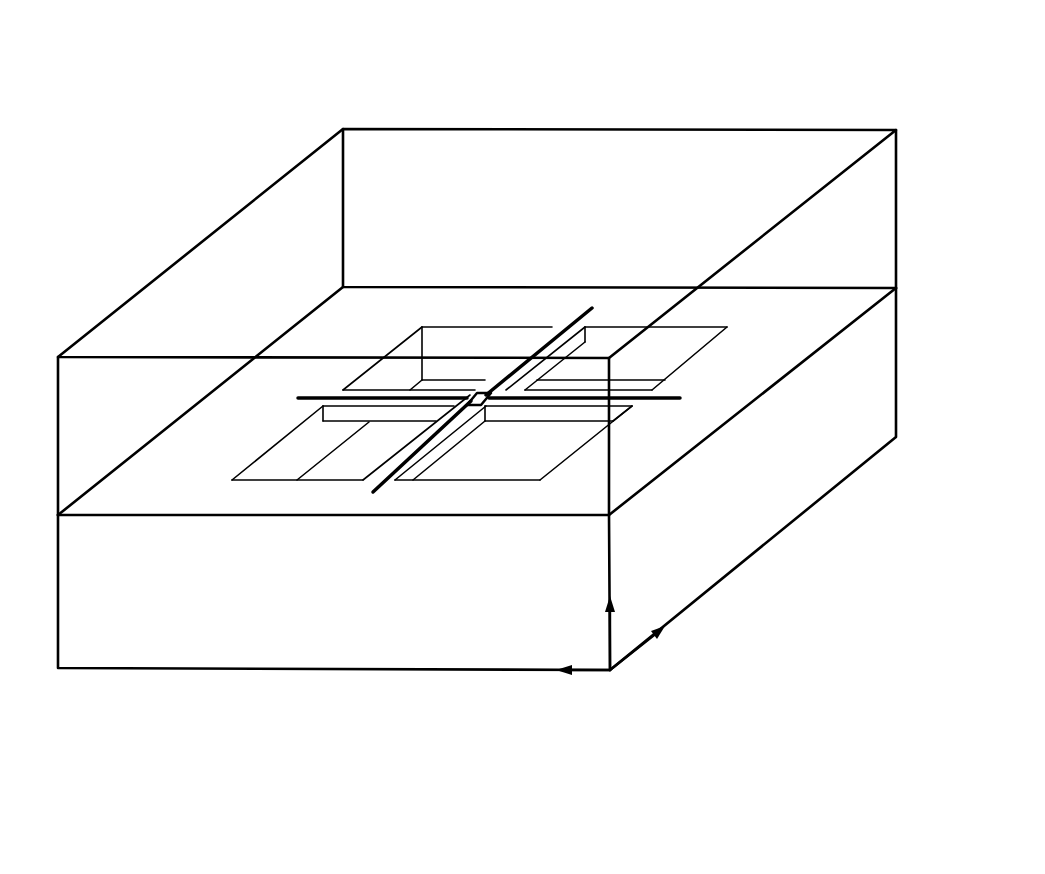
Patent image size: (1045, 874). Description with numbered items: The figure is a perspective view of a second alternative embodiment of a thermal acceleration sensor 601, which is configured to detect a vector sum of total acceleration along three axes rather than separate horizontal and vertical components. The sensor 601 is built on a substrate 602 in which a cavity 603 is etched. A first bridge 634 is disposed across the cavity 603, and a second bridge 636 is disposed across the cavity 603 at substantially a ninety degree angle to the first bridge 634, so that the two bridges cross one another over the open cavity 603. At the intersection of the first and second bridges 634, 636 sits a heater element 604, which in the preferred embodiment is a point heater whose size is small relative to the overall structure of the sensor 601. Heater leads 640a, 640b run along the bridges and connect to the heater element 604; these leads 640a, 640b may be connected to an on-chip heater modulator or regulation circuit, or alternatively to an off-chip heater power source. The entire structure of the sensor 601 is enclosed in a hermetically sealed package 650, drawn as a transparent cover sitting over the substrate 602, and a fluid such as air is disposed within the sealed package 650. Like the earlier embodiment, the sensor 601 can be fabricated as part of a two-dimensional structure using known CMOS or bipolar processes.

The thermal acceleration sensor 601 is at (279, 71).
The hermetically sealed package 650 is at (268, 185).
The substrate 602 is at (541, 655).
The cavity 603 is at (684, 340).
The heater element 604 is at (477, 380).
The first bridge 634 is at (440, 467).
The second bridge 636 is at (545, 422).
The heater lead 640a is at (215, 715).
The heater lead 640b is at (855, 507).